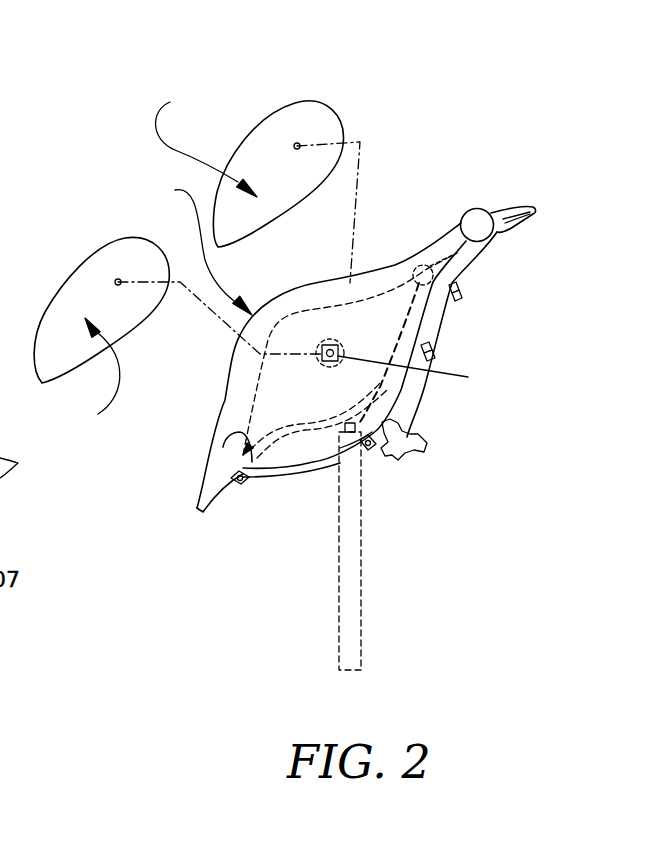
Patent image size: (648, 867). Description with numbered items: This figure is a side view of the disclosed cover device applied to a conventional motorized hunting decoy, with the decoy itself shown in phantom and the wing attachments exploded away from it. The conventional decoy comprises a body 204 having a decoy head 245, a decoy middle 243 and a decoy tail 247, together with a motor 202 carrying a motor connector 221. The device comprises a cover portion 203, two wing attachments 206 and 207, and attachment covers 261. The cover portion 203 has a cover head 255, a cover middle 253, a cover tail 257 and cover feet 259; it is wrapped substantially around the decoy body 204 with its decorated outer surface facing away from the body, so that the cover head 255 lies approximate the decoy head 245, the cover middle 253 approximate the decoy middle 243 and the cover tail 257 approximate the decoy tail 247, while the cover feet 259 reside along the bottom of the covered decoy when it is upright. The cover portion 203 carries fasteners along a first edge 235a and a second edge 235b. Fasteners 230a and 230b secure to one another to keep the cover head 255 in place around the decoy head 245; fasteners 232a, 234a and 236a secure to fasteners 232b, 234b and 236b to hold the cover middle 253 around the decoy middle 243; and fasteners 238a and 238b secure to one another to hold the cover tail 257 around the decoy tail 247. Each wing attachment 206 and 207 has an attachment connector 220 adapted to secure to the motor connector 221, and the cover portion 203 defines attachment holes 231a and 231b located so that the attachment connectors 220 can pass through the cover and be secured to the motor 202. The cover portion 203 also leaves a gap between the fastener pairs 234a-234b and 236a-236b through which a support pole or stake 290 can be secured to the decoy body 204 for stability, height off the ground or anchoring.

The motor 202 is at (376, 405).
The cover portion 203 is at (186, 247).
The body 204 is at (340, 362).
The wing attachment 206 is at (206, 143).
The wing attachment 207 is at (83, 375).
The attachment connector 220 is at (297, 143).
The motor connector 221 is at (426, 372).
The fastener 230a is at (516, 233).
The fastener 230b is at (537, 217).
The attachment hole 231a is at (320, 358).
The attachment hole 231b is at (323, 365).
The fastener 232a is at (456, 282).
The fastener 232b is at (460, 291).
The fastener 234a is at (434, 352).
The fastener 234b is at (437, 355).
The first edge 235a is at (313, 472).
The second edge 235b is at (298, 468).
The fastener 236a is at (352, 460).
The fastener 236b is at (365, 450).
The fastener 238a is at (238, 483).
The fastener 238b is at (246, 479).
The decoy middle 243 is at (392, 305).
The decoy head 245 is at (422, 265).
The decoy tail 247 is at (224, 445).
The cover middle 253 is at (333, 282).
The cover head 255 is at (481, 208).
The cover tail 257 is at (230, 493).
The cover feet 259 is at (392, 446).
The attachment cover 261 is at (323, 128).
The support pole or stake 290 is at (353, 593).